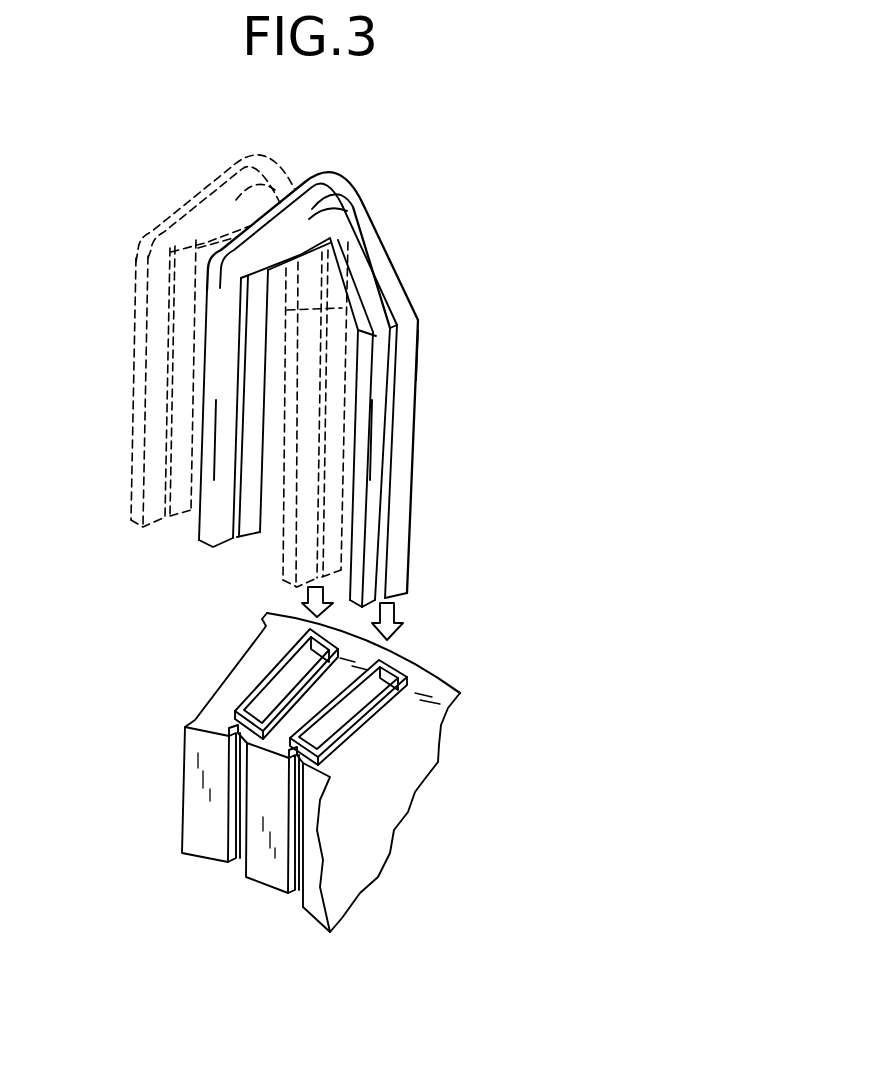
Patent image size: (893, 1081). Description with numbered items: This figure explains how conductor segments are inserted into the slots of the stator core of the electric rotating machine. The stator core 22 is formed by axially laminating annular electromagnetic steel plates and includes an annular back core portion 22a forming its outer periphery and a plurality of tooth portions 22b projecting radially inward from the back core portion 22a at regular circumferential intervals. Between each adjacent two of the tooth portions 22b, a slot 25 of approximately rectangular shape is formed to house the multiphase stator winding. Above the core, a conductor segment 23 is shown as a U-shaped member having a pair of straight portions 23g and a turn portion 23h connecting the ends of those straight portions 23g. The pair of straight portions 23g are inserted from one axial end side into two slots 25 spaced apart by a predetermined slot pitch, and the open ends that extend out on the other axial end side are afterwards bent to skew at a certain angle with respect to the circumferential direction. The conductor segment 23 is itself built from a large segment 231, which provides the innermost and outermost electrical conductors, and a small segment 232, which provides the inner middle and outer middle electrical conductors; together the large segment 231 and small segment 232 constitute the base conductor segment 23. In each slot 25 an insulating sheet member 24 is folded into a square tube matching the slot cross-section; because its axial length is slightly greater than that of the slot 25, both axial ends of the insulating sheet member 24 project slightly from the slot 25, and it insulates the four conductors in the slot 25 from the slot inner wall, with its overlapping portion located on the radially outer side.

The stator core 22 is at (341, 761).
The back core portion 22a is at (410, 670).
The tooth portion 22b is at (317, 698).
The conductor segment 23 is at (292, 357).
The straight portion 23g is at (250, 480).
The turn portion 23h is at (343, 232).
The large segment 231 is at (420, 356).
The small segment 232 is at (392, 416).
The insulating sheet member 24 is at (280, 662).
The slot 25 is at (232, 797).